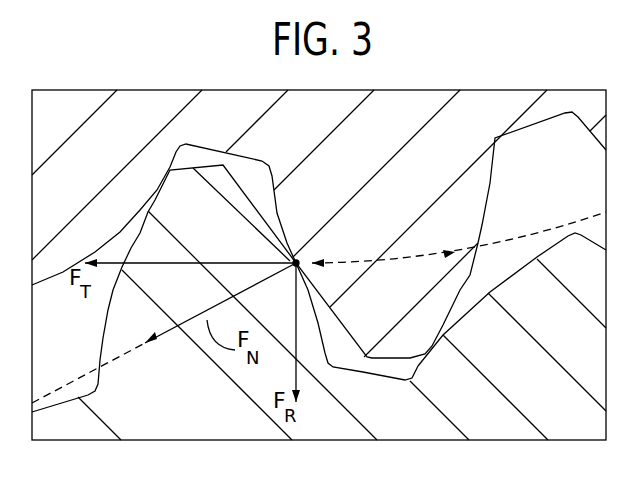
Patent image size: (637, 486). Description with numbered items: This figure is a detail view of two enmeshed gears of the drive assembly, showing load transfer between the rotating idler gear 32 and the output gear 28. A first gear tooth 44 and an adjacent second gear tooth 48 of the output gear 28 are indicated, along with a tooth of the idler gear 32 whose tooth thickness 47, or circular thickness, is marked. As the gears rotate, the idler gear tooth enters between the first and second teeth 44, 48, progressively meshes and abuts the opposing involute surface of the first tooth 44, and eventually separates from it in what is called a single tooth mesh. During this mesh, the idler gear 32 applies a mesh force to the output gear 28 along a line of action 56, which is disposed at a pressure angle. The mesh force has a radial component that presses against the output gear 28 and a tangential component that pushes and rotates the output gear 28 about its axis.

The output gear 28 is at (231, 426).
The idler gear 32 is at (368, 159).
The first gear tooth 44 is at (219, 236).
The tooth thickness 47 is at (343, 261).
The second gear tooth 48 is at (572, 335).
The line of action 56 is at (90, 373).